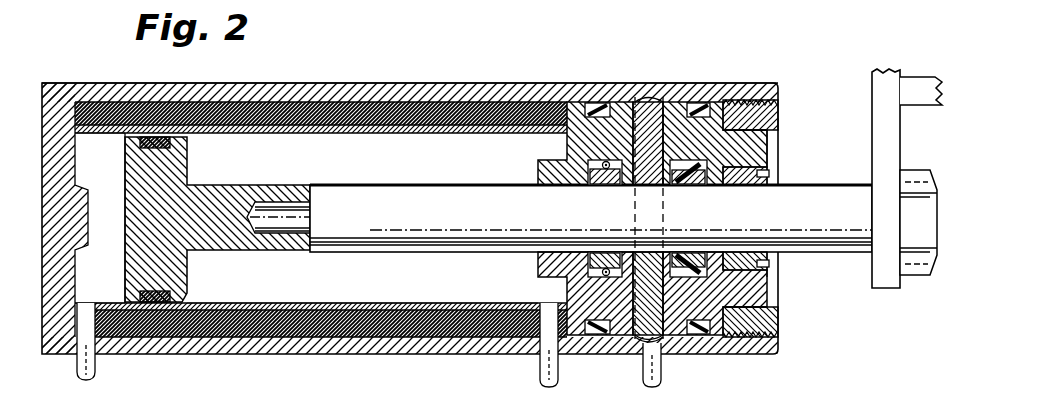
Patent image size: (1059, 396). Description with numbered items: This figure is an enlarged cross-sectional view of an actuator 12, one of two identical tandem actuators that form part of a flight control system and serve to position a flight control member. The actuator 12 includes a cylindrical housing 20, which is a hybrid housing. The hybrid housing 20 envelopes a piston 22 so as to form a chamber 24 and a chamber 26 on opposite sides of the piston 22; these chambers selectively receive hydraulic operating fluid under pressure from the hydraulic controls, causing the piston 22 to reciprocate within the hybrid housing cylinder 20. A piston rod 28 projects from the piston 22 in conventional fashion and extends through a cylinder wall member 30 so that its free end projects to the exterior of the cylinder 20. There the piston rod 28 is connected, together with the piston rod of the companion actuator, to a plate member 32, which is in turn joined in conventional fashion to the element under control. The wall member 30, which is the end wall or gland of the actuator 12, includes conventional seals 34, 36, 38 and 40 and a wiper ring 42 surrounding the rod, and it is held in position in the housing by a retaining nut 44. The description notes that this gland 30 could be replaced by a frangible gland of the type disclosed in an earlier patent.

The actuator 12 is at (395, 86).
The cylindrical housing 20 is at (312, 92).
The piston 22 is at (172, 170).
The chamber 24 is at (96, 145).
The chamber 26 is at (392, 294).
The piston rod 28 is at (367, 202).
The cylinder wall member 30 is at (665, 103).
The plate member 32 is at (883, 110).
The seal 34 is at (598, 103).
The seal 36 is at (700, 103).
The seal 38 is at (600, 187).
The seal 40 is at (687, 188).
The wiper ring 42 is at (753, 188).
The retaining nut 44 is at (747, 115).